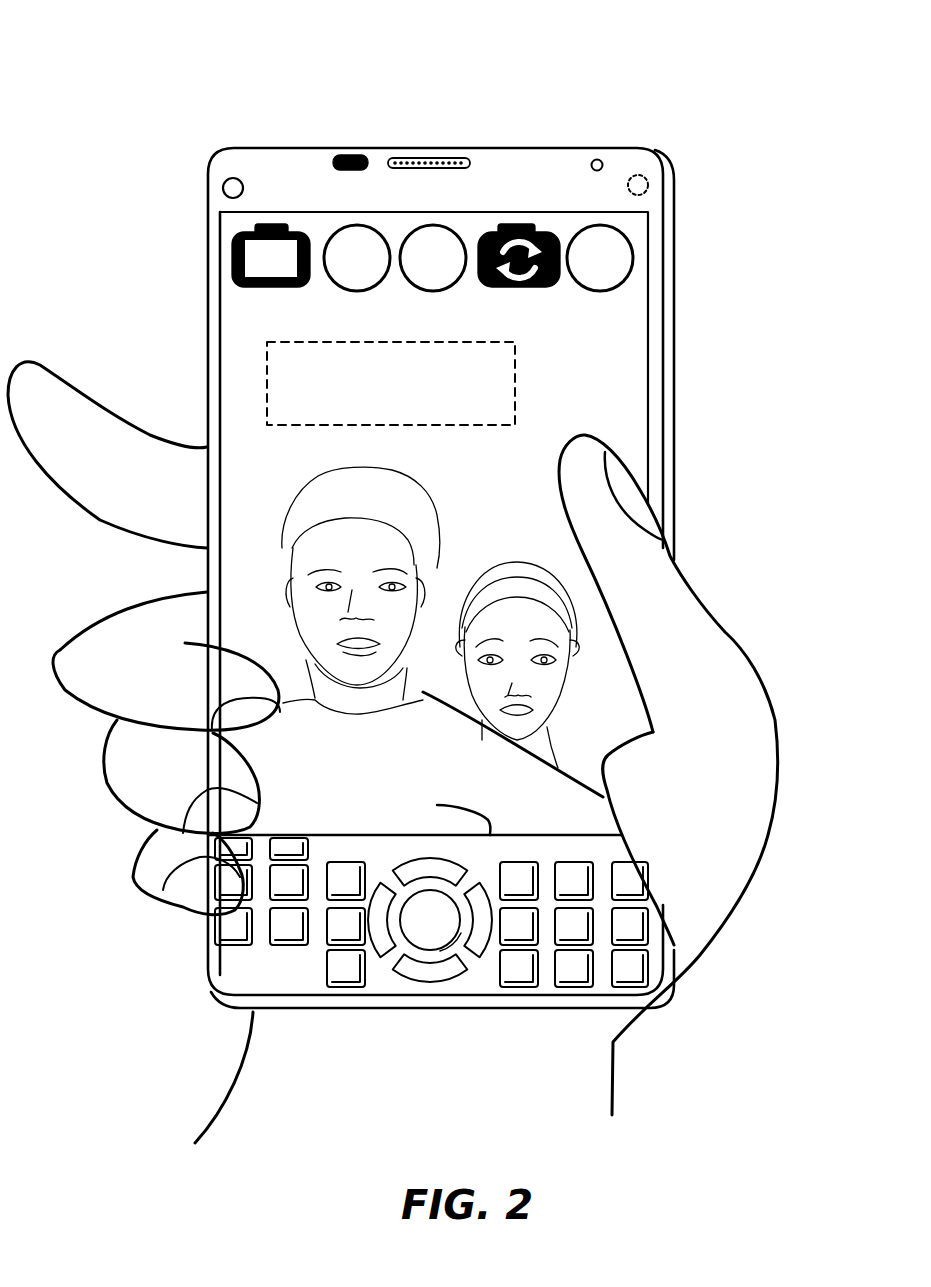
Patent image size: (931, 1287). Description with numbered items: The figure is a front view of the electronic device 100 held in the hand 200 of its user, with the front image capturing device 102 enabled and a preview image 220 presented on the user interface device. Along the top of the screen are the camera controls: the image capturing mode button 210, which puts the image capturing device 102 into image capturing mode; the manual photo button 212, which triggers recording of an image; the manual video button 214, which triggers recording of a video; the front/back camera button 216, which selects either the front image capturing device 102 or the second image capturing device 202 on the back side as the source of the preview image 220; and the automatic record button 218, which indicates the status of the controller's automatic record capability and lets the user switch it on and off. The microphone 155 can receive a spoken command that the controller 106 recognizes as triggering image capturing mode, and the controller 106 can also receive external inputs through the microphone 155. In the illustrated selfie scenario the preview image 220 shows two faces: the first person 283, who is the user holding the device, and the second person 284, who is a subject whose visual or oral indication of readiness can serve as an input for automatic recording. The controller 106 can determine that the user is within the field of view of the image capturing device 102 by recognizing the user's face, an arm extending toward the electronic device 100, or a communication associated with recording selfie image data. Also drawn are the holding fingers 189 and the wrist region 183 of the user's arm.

The electronic device 100 is at (207, 198).
The image capturing device 102 is at (243, 182).
The microphone 155 is at (348, 157).
The second image capturing device 202 is at (645, 178).
The controller 106 is at (515, 368).
The preview image 220 is at (618, 422).
The image capturing mode button 210 is at (236, 258).
The manual photo button 212 is at (345, 225).
The manual video button 214 is at (457, 233).
The front/back camera button 216 is at (532, 227).
The automatic record button 218 is at (637, 263).
The first person 283 is at (317, 483).
The second person 284 is at (547, 740).
The left hand 189 is at (257, 617).
The hand 200 is at (774, 725).
The wrist 183 is at (208, 1124).